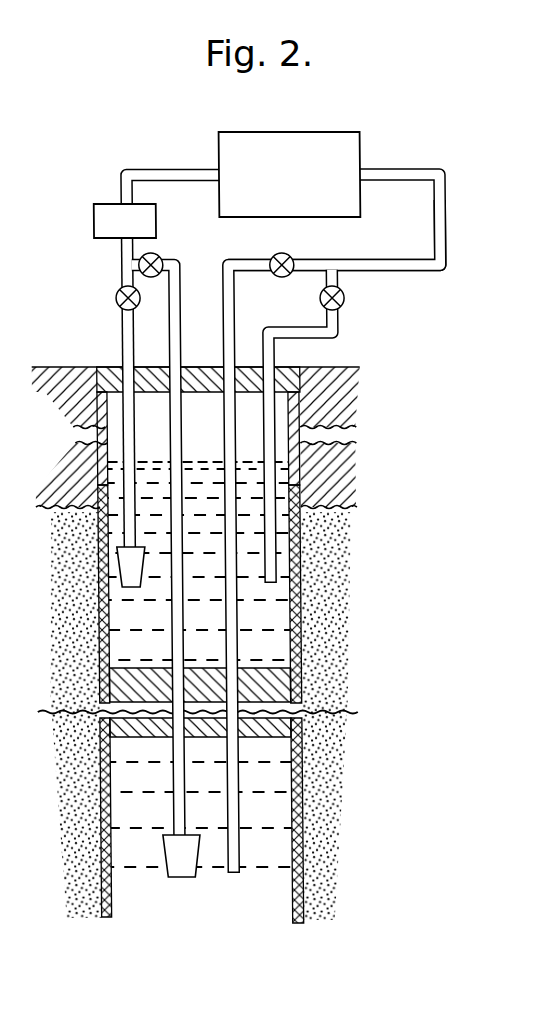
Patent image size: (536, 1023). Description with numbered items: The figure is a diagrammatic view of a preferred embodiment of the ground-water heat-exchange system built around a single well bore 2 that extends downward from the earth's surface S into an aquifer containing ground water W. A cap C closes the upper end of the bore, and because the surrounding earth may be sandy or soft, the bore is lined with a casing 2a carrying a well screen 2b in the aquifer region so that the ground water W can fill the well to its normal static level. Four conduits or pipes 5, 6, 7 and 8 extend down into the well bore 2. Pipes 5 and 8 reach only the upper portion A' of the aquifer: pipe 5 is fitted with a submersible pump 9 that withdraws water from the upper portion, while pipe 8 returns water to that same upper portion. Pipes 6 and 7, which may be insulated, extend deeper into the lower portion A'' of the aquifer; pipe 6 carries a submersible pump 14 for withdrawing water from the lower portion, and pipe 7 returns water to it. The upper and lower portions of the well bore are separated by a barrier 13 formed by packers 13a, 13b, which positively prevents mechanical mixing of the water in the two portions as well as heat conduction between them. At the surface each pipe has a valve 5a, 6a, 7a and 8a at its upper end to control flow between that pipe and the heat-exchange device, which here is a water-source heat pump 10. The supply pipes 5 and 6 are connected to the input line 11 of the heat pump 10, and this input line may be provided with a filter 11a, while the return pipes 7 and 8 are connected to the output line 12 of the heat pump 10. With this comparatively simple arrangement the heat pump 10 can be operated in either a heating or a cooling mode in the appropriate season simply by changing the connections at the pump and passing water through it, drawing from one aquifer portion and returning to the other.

The well bore 2 is at (204, 657).
The casing 2a is at (85, 450).
The well screen 2b is at (97, 849).
The pipe 5 is at (122, 345).
The valve 5a is at (117, 298).
The pipe 6 is at (169, 343).
The valve 6a is at (161, 257).
The pipe 7 is at (223, 346).
The valve 7a is at (279, 278).
The pipe 8 is at (263, 352).
The valve 8a is at (342, 302).
The submersible pump 9 is at (131, 588).
The water-source heat pump 10 is at (317, 132).
The input line 11 is at (178, 168).
The filter 11a is at (95, 232).
The output line 12 is at (388, 167).
The barrier 13 is at (222, 709).
The packer 13a is at (268, 671).
The packer 13b is at (268, 734).
The submersible pump 14 is at (177, 878).
The earth's surface S is at (62, 364).
The ground water W is at (208, 454).
The cap C is at (246, 396).
The upper portion of the aquifer A' is at (61, 715).
The lower portion of the aquifer A'' is at (188, 716).